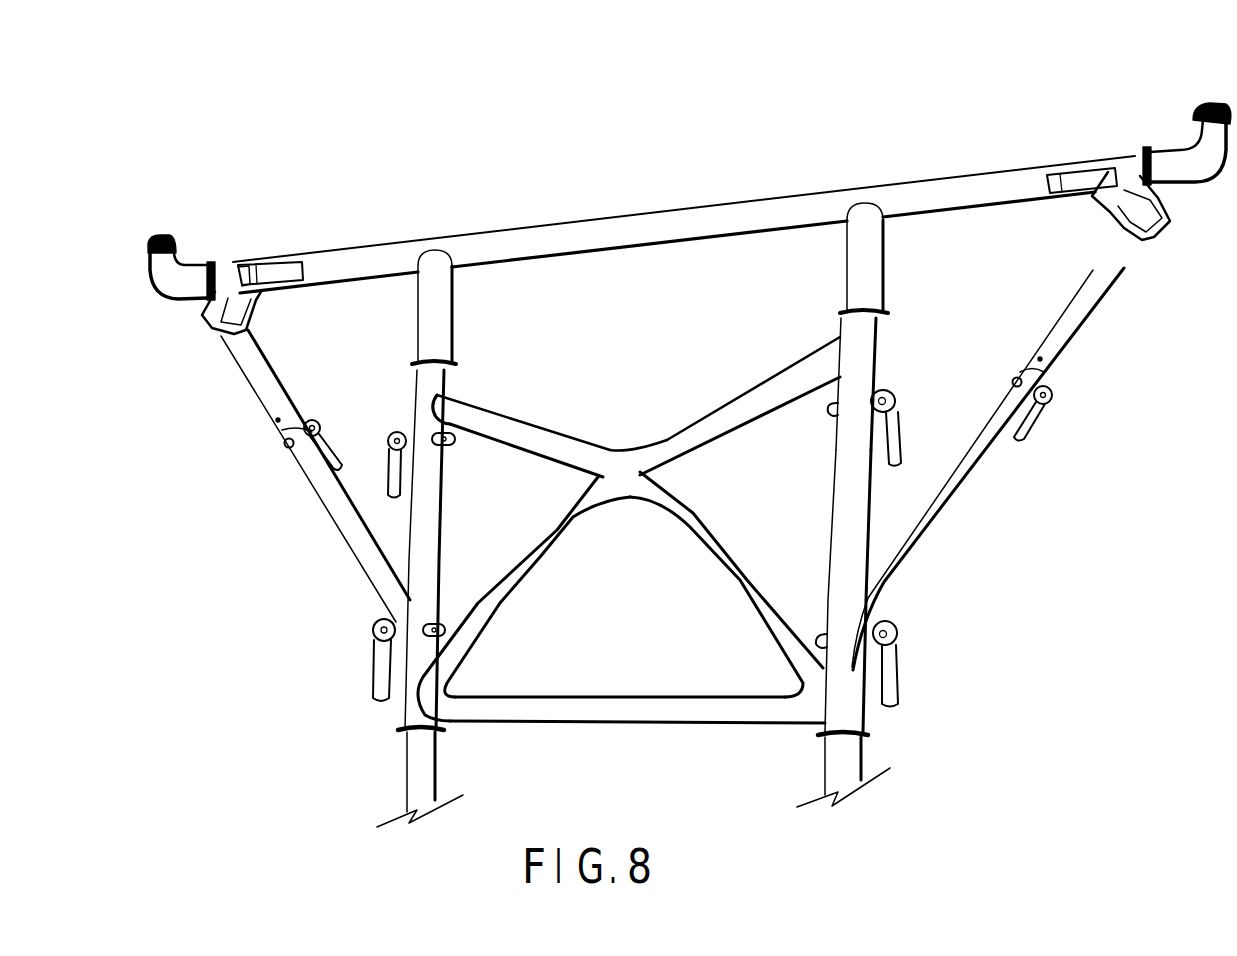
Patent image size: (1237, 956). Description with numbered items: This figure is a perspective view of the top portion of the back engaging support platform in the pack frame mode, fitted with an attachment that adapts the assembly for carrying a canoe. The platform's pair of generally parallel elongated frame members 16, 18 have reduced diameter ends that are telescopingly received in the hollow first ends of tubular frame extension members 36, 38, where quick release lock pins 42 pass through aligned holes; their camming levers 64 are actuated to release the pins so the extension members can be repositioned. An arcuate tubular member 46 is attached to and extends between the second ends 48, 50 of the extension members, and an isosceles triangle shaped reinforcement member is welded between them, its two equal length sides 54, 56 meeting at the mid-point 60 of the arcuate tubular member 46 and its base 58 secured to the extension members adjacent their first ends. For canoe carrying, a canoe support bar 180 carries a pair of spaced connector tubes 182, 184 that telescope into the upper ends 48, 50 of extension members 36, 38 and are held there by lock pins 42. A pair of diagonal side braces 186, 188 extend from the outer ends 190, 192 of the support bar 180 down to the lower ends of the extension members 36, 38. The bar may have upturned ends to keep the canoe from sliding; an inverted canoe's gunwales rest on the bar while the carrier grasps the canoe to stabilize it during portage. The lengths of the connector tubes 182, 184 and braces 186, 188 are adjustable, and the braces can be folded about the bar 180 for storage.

The elongated frame member 16 is at (862, 746).
The elongated frame member 18 is at (412, 752).
The frame extension member 36 is at (833, 547).
The frame extension member 38 is at (432, 492).
The quick release lock pin 42 is at (450, 446).
The arcuate tubular member 46 is at (673, 440).
The second end of extension frame member 48 is at (868, 350).
The second end of extension frame member 50 is at (426, 389).
The triangle side 54 is at (680, 508).
The triangle side 56 is at (538, 546).
The triangle base 58 is at (604, 706).
The mid-point of arcuate tubular member 60 is at (614, 453).
The camming lever 64 is at (898, 458).
The canoe support bar 180 is at (572, 234).
The connector tube 182 is at (874, 291).
The connector tube 184 is at (453, 336).
The diagonal side brace 186 is at (985, 462).
The diagonal side brace 188 is at (308, 488).
The outer end of canoe support bar 190 is at (1125, 162).
The outer end of canoe support bar 192 is at (222, 272).